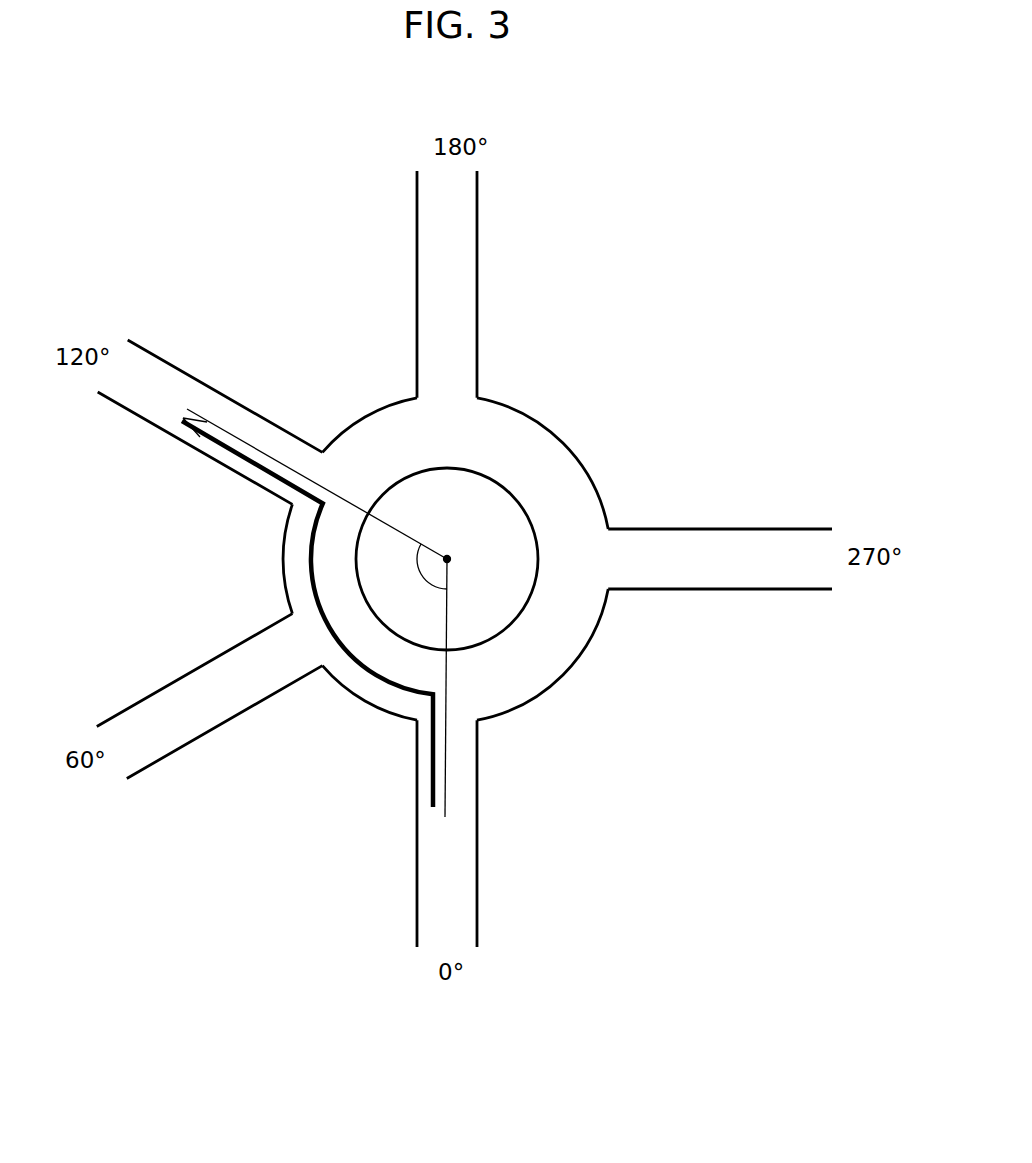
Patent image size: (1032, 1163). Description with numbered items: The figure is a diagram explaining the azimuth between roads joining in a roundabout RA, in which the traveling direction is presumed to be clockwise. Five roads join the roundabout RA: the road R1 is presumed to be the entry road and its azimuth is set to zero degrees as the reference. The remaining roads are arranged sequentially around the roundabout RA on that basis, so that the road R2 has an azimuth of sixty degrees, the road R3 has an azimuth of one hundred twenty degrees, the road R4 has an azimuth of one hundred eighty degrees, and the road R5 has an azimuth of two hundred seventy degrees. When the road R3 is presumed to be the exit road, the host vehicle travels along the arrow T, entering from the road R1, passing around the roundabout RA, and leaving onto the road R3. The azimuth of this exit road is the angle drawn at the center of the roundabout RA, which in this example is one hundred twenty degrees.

The roundabout RA is at (549, 402).
The road R1 is at (477, 840).
The road R2 is at (230, 719).
The road R3 is at (239, 402).
The road R4 is at (478, 281).
The road R5 is at (722, 528).
The arrow T is at (312, 562).